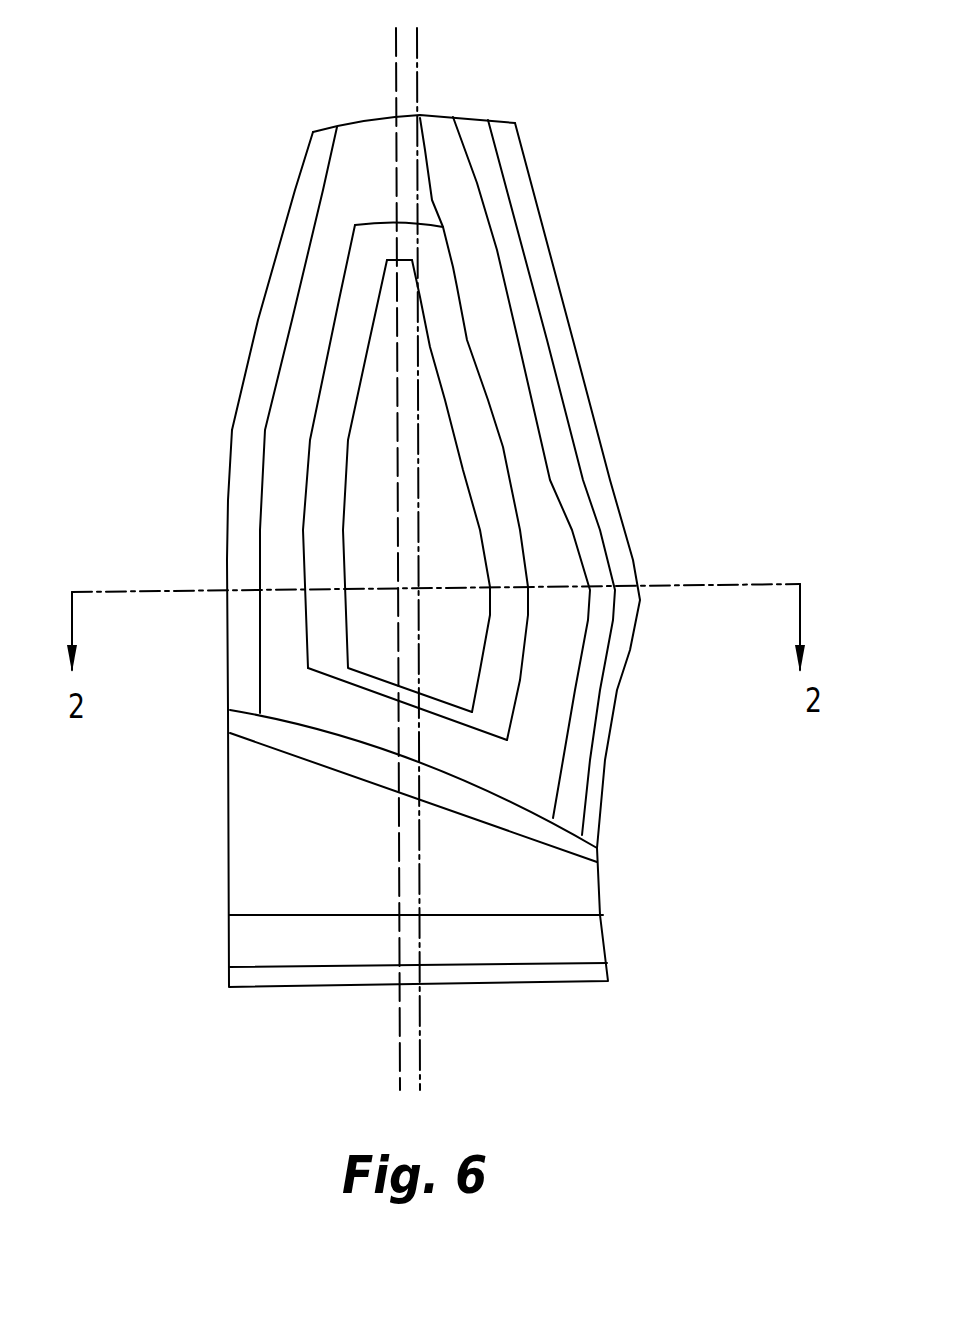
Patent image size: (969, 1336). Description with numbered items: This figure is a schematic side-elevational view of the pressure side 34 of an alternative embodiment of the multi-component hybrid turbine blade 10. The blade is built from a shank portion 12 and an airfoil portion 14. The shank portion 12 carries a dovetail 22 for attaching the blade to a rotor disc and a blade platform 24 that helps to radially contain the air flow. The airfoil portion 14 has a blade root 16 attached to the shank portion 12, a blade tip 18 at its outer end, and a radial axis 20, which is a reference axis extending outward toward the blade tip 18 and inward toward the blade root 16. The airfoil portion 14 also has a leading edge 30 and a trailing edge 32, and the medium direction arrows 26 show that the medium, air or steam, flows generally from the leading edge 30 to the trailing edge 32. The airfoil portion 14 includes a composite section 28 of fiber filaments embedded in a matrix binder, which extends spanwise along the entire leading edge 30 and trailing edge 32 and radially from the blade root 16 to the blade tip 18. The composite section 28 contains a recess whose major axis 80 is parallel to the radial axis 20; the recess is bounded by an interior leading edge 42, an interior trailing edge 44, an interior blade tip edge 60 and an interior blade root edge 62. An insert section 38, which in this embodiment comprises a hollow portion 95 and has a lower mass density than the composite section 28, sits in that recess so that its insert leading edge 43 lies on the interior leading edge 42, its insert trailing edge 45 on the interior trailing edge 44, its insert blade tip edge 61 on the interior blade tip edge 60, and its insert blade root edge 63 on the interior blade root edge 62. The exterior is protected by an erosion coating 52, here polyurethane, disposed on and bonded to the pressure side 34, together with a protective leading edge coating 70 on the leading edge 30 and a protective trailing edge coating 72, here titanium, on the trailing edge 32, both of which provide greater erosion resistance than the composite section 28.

The multi-component hybrid turbine blade 10 is at (340, 52).
The shank portion 12 is at (252, 812).
The airfoil portion 14 is at (198, 504).
The blade root 16 is at (527, 803).
The blade tip 18 is at (353, 120).
The radial axis 20 is at (420, 1033).
The dovetail 22 is at (262, 947).
The blade platform 24 is at (293, 742).
The medium direction arrows 26 is at (630, 301).
The composite section 28 is at (357, 152).
The leading edge 30 is at (628, 502).
The trailing edge 32 is at (227, 533).
The pressure side 34 is at (288, 397).
The insert section 38 is at (472, 390).
The interior leading edge 42 is at (452, 267).
The insert leading edge 43 is at (503, 447).
The interior trailing edge 44 is at (340, 298).
The insert trailing edge 45 is at (303, 575).
The erosion coating 52 is at (477, 218).
The interior blade tip edge 60 is at (377, 226).
The insert blade tip edge 61 is at (420, 118).
The interior blade root edge 62 is at (450, 707).
The insert blade root edge 63 is at (478, 733).
The protective leading edge coating 70 is at (617, 528).
The protective trailing edge coating 72 is at (317, 190).
The major axis 80 is at (400, 1043).
The hollow portion 95 is at (343, 612).